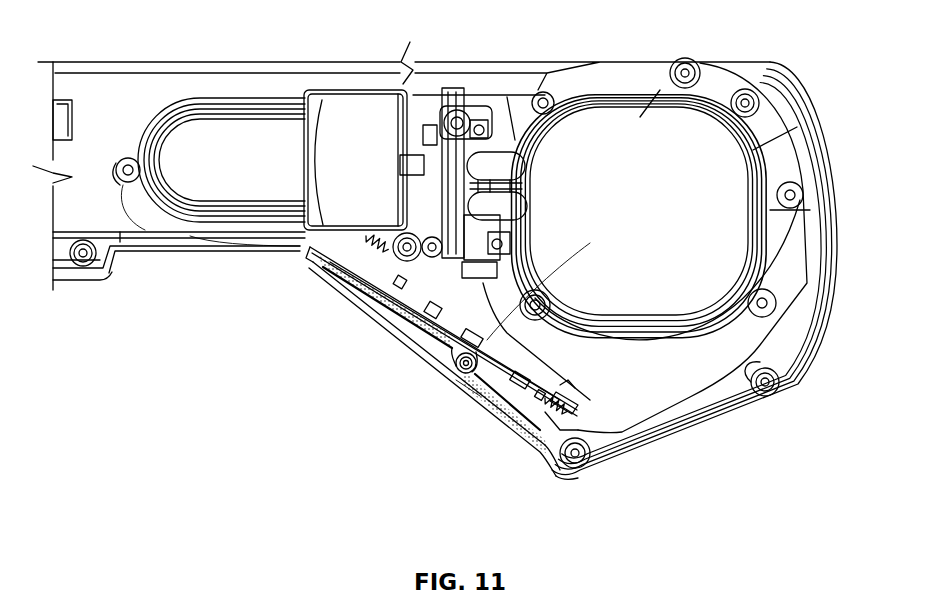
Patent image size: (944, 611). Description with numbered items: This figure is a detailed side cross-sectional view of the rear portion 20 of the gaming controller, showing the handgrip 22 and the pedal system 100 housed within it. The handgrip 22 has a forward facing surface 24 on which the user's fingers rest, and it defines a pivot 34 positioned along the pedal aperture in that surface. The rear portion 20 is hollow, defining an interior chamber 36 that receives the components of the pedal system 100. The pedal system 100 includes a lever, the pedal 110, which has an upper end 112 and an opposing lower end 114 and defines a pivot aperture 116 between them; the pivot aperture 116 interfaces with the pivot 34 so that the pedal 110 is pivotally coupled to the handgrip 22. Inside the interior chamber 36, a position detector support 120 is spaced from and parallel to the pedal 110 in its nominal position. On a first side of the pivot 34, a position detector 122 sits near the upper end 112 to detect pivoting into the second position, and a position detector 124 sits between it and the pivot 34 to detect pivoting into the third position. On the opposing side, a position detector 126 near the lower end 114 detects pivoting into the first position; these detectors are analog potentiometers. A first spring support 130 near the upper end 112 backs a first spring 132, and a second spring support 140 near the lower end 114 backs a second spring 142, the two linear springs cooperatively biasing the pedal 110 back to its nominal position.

The rear portion 20 is at (95, 30).
The handgrip 22 is at (737, 413).
The forward facing surface 24 is at (540, 473).
The pivot 34 is at (452, 398).
The interior chamber 36 is at (684, 370).
The pedal system 100 is at (494, 442).
The pedal 110 is at (400, 283).
The upper end 112 is at (296, 263).
The lower end 114 is at (534, 470).
The pivot aperture 116 is at (465, 374).
The position detector support 120 is at (490, 300).
The position detector 122 is at (400, 253).
The position detector 124 is at (440, 320).
The position detector 126 is at (545, 340).
The first spring support 130 is at (392, 230).
The first spring 132 is at (372, 238).
The second spring support 140 is at (557, 403).
The second spring 142 is at (560, 428).